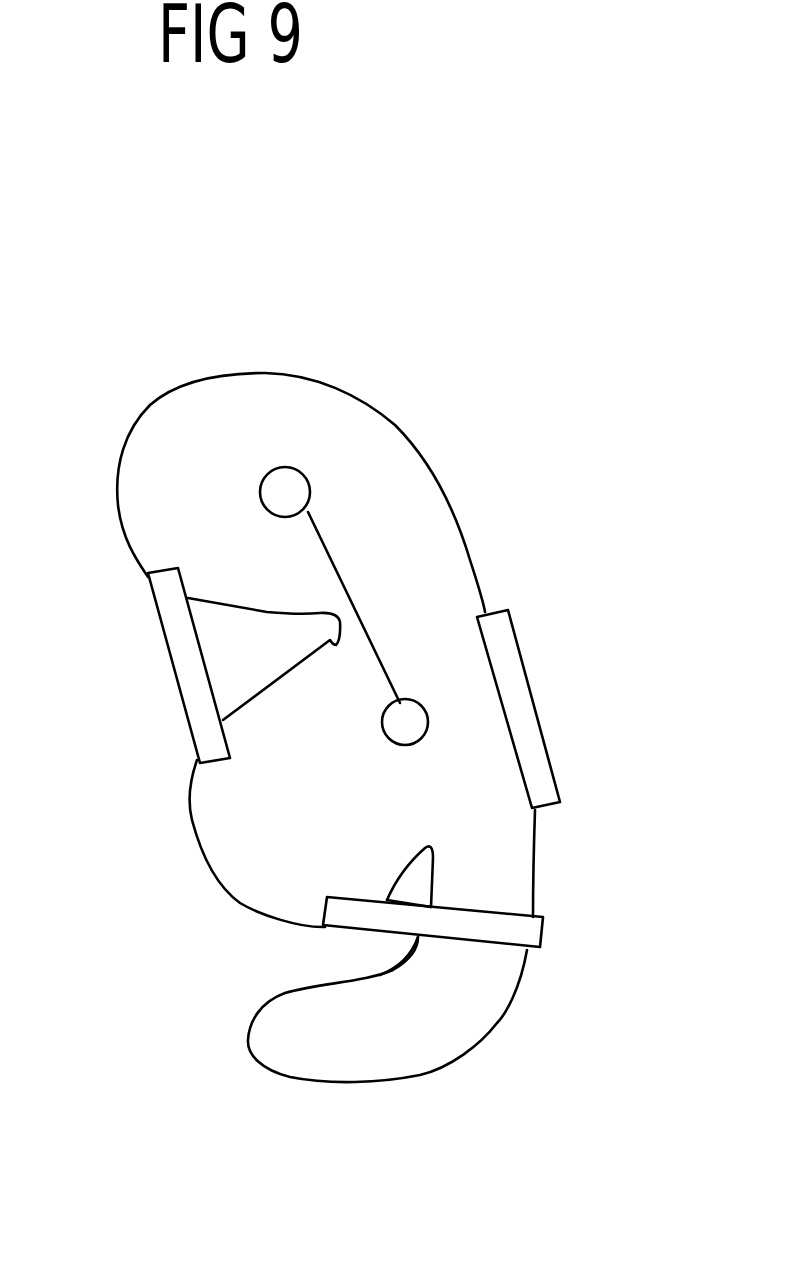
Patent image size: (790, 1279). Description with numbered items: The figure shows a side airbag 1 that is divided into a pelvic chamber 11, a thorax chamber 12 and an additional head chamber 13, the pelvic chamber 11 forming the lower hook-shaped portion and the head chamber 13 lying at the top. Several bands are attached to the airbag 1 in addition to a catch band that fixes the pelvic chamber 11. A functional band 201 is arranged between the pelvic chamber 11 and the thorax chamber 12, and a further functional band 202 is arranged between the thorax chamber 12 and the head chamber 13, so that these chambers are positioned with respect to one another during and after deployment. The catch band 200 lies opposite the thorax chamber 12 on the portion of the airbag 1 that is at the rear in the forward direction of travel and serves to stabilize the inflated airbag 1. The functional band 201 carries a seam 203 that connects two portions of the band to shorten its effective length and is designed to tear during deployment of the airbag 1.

The airbag 1 is at (462, 482).
The pelvic chamber 11 is at (385, 1048).
The thorax chamber 12 is at (232, 850).
The head chamber 13 is at (335, 467).
The catch band 200 is at (515, 698).
The functional band 201 is at (517, 935).
The functional band 202 is at (180, 655).
The seam 203 is at (450, 915).